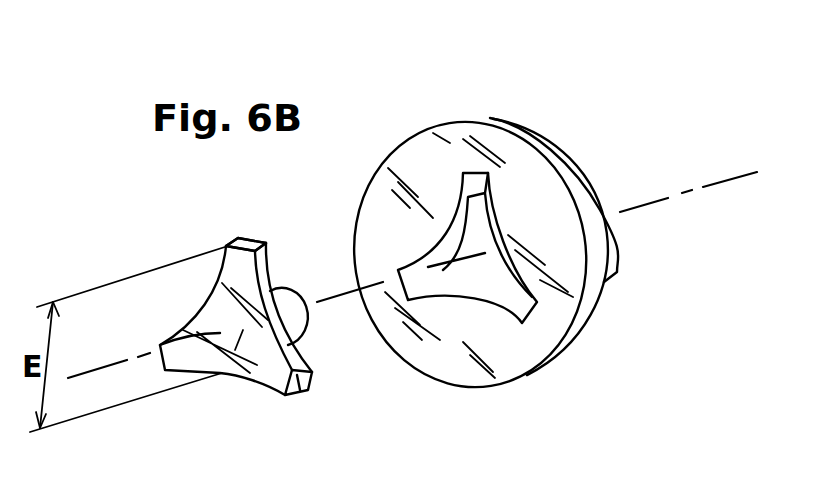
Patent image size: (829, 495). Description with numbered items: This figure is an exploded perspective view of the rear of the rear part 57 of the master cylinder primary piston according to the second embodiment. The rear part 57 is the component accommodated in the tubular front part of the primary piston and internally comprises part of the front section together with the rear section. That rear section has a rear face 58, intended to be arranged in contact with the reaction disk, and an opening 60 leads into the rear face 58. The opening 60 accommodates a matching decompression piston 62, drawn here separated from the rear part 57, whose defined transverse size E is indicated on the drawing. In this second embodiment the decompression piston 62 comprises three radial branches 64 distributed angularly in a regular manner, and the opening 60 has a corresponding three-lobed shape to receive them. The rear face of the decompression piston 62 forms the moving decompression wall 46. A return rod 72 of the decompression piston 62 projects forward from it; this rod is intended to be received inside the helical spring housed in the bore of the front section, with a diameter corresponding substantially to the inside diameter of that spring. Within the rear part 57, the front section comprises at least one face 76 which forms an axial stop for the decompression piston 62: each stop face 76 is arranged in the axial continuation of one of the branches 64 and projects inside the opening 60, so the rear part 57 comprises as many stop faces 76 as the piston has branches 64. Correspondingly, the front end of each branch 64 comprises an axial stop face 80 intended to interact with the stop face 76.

The moving decompression wall 46 is at (215, 312).
The rear part 57 is at (512, 128).
The rear face 58 is at (430, 162).
The opening 60 is at (482, 225).
The decompression piston 62 is at (228, 378).
The radial branches 64 is at (248, 241).
The return rod 72 is at (290, 308).
The stop face 76 is at (453, 274).
The axial stop face 80 is at (268, 280).